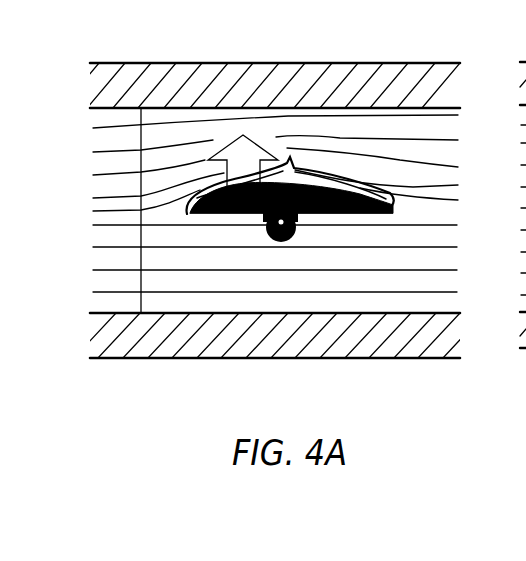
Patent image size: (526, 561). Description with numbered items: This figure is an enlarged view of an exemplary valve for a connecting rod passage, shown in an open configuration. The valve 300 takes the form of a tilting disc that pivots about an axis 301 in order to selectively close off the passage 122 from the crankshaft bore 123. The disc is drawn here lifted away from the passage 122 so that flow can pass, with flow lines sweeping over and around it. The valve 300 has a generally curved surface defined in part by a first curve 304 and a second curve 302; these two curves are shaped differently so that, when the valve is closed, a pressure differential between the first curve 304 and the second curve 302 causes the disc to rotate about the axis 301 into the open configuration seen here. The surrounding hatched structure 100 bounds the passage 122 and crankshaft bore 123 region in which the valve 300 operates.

The flow channel structure / wall 100 is at (148, 338).
The passage 122 is at (497, 197).
The crankshaft bore 123 is at (85, 232).
The valve 300 is at (322, 210).
The axis 301 is at (276, 241).
The second curve 302 is at (330, 177).
The first curve 304 is at (210, 183).